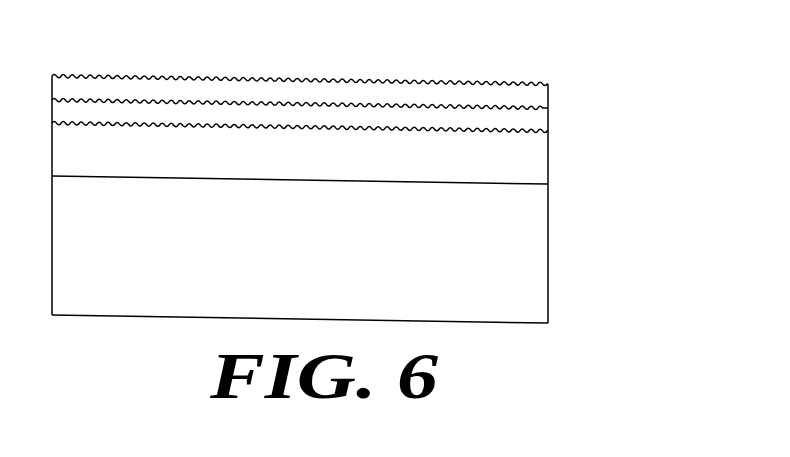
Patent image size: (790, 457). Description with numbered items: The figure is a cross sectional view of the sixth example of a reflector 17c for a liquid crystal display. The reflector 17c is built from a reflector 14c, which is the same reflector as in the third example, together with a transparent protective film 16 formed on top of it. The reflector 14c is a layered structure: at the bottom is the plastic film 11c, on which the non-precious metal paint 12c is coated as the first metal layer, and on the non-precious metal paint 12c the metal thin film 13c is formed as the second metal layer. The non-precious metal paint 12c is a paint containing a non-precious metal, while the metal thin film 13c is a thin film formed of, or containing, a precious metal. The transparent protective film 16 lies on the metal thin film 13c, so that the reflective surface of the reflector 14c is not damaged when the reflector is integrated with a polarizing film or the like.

The reflector for a liquid crystal display 17c is at (454, 34).
The transparent protective film 16 is at (549, 93).
The metal thin film 13c is at (549, 119).
The non-precious metal paint 12c is at (549, 158).
The plastic film 11c is at (548, 227).
The reflector 14c is at (395, 211).